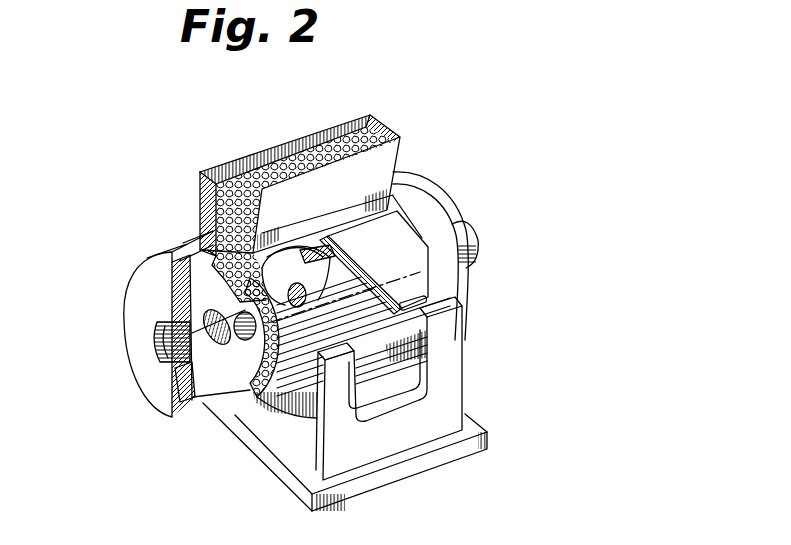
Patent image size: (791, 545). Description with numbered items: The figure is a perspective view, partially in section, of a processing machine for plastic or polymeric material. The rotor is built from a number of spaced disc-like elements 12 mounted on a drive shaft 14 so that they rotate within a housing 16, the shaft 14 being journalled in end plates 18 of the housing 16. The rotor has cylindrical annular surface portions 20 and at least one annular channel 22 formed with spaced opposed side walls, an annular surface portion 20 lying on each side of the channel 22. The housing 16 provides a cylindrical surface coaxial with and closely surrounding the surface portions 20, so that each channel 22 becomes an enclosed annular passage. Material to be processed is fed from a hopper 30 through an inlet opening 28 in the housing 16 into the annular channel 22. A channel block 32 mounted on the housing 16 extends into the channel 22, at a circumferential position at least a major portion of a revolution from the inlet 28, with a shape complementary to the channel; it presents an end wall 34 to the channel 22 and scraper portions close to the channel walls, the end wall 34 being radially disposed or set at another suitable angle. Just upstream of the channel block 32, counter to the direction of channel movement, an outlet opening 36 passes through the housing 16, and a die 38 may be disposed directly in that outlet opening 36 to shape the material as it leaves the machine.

The disc-like elements 12 is at (198, 257).
The drive shaft 14 is at (473, 237).
The housing 16 is at (183, 243).
The end plates 18 is at (465, 272).
The annular surface portions 20 is at (257, 400).
The annular channel 22 is at (228, 373).
The inlet opening 28 is at (208, 252).
The hopper 30 is at (385, 122).
The channel block 32 is at (312, 272).
The end wall 34 is at (172, 350).
The outlet opening 36 is at (392, 214).
The die 38 is at (412, 281).